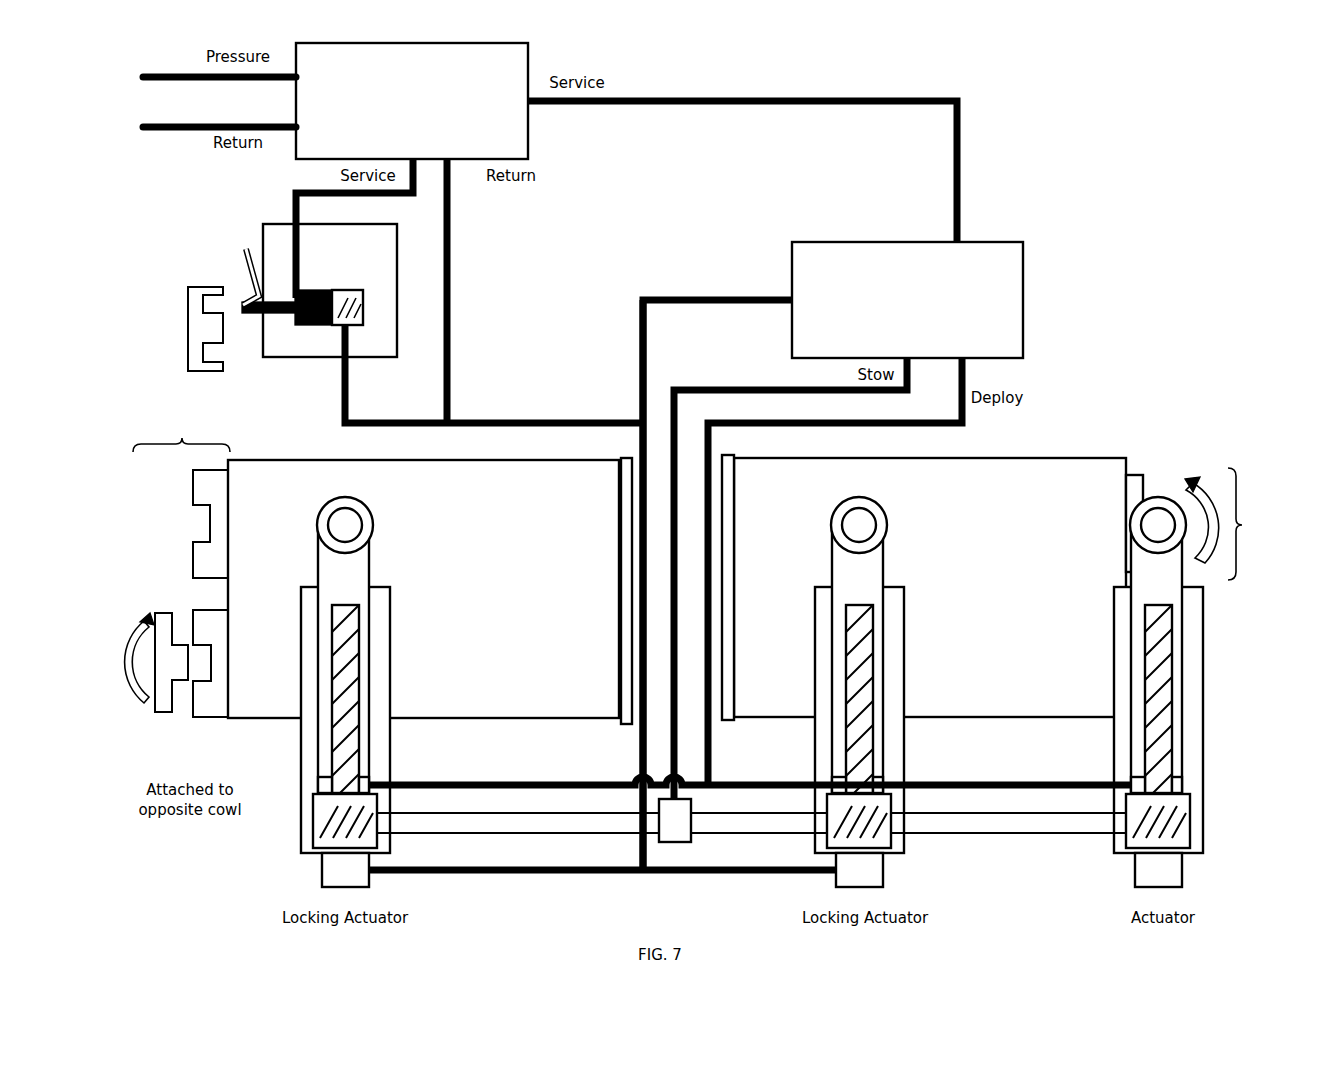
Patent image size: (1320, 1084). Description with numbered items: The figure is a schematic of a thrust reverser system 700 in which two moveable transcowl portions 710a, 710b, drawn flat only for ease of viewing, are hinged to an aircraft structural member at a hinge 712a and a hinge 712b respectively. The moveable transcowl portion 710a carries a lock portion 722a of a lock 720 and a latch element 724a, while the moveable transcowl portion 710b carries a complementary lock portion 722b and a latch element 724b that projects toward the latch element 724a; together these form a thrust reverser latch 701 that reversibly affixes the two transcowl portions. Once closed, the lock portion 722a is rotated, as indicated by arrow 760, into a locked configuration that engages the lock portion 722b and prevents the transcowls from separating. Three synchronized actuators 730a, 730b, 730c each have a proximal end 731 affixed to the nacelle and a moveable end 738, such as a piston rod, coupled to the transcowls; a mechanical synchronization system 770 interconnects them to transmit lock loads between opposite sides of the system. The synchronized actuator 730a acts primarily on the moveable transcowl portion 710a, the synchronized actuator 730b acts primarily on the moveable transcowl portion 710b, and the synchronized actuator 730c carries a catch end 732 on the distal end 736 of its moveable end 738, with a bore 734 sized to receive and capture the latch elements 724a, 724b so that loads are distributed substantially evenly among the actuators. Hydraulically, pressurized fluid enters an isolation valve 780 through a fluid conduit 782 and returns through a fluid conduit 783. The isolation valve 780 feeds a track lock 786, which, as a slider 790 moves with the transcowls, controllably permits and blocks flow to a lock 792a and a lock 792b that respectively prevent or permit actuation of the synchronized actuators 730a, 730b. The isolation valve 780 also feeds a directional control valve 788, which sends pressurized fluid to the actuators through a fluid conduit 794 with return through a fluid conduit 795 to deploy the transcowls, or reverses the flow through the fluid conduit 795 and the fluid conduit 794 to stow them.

The thrust reverser system 700 is at (1160, 136).
The thrust reverser latch 701 is at (1100, 434).
The moveable transcowl portion 710a is at (423, 589).
The moveable transcowl portion 710b is at (930, 587).
The hinge 712a is at (621, 605).
The hinge 712b is at (734, 634).
The lock 720 is at (709, 496).
The lock portion 722a is at (172, 712).
The lock portion 722b is at (215, 620).
The latch element 724a is at (213, 516).
The latch element 724b is at (1140, 523).
The synchronized actuator 730a is at (390, 760).
The synchronized actuator 730b is at (904, 757).
The synchronized actuator 730c is at (1204, 774).
The proximal end 731 is at (293, 862).
The catch end 732 is at (1175, 500).
The bore 734 is at (1165, 516).
The distal end 736 is at (1108, 575).
The moveable end 738 is at (369, 640).
The arrow 760 is at (150, 617).
The mechanical synchronization system 770 is at (482, 834).
The isolation valve 780 is at (412, 101).
The fluid conduit 782 is at (200, 82).
The fluid conduit 783 is at (220, 122).
The track lock 786 is at (319, 290).
The directional control valve 788 is at (907, 300).
The slider 790 is at (188, 296).
The lock 792a is at (580, 870).
The lock 792b is at (860, 870).
The fluid conduit 794 is at (963, 425).
The fluid conduit 795 is at (774, 390).